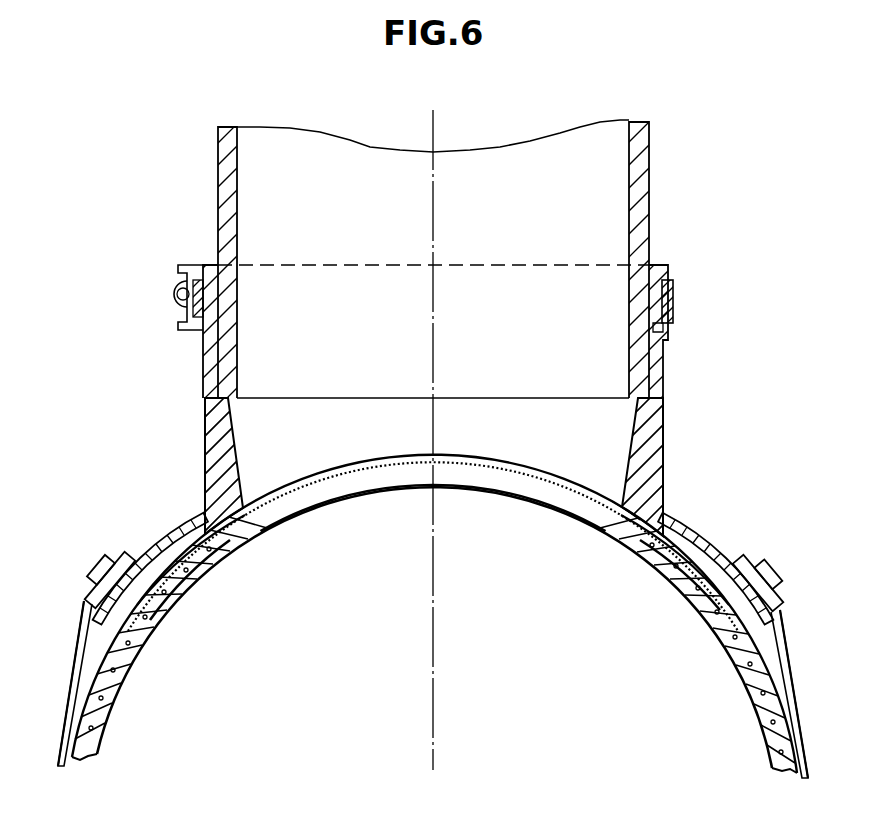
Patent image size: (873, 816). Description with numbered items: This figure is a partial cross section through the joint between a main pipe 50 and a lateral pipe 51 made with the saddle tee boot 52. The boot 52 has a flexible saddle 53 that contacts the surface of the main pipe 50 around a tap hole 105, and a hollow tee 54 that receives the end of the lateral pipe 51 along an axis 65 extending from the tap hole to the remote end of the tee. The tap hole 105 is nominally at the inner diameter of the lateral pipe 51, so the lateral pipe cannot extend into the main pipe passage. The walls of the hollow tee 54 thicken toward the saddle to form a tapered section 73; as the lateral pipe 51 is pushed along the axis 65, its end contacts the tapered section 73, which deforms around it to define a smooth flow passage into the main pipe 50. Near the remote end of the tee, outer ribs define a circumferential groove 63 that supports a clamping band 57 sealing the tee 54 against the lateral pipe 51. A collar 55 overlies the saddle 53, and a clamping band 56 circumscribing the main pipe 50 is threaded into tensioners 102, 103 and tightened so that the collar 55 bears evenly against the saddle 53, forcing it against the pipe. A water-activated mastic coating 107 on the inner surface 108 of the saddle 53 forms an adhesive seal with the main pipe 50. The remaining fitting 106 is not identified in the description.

The main pipe 50 is at (747, 670).
The lateral pipe 51 is at (650, 142).
The saddle tee boot 52 is at (666, 484).
The flexible saddle 53 is at (183, 592).
The hollow tee 54 is at (205, 410).
The collar 55 is at (192, 522).
The clamping band 56 is at (80, 625).
The clamping band 57 is at (675, 292).
The circumferential groove 63 is at (658, 326).
The axis 65 is at (436, 181).
The tapered section 73 is at (243, 503).
The tensioner 102 is at (105, 580).
The tensioner 103 is at (765, 590).
The tap hole 105 is at (598, 520).
The eye bracket 106 is at (170, 294).
The coating 107 is at (622, 512).
The inner surface 108 is at (687, 567).